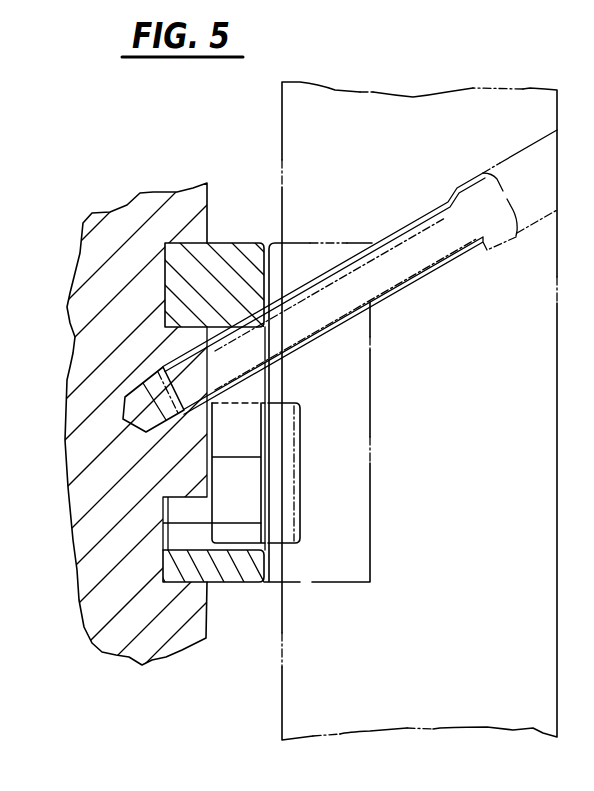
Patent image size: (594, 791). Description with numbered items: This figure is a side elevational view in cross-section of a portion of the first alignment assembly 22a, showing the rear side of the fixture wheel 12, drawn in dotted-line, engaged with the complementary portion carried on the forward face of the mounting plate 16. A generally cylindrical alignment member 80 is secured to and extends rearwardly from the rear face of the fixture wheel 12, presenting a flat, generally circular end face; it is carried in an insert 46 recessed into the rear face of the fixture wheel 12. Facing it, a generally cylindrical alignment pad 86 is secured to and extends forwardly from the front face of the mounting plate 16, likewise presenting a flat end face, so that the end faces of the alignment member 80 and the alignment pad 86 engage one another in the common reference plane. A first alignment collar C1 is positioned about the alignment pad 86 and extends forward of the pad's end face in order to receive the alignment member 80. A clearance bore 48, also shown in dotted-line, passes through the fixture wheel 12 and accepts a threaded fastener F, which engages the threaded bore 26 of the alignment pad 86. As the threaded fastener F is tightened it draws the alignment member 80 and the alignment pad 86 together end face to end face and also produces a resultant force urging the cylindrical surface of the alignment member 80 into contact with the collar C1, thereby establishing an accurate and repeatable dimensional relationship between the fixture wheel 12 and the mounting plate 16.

The fixture wheel 12 is at (270, 682).
The mounting plate 16 is at (106, 214).
The first alignment assembly 22a is at (244, 136).
The threaded bore 26 is at (163, 368).
The insert 46 is at (317, 583).
The clearance bore 48 is at (527, 150).
The alignment member 80 is at (300, 534).
The alignment pad 86 is at (267, 381).
The first alignment collar C1 is at (240, 242).
The threaded fastener F is at (441, 203).